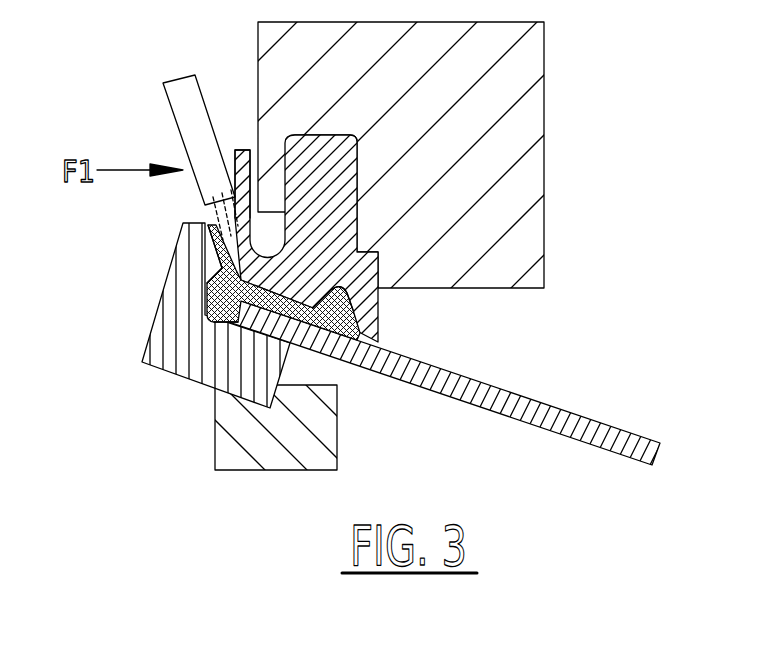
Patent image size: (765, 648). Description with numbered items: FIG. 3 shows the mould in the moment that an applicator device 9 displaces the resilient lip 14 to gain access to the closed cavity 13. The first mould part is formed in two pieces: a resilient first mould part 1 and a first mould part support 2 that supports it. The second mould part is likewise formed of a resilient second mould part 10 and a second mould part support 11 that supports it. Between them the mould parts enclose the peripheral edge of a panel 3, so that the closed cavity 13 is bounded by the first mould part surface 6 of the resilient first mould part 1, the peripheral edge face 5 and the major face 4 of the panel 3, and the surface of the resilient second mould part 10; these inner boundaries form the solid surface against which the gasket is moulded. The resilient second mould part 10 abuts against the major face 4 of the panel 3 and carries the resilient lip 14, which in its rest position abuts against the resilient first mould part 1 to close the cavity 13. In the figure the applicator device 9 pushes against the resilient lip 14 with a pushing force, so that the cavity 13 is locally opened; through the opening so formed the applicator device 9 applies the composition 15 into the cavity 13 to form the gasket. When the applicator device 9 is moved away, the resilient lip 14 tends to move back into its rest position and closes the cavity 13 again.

The resilient first mould part 1 is at (196, 360).
The first mould part support 2 is at (242, 460).
The panel 3 is at (565, 410).
The major face of the panel 4 is at (305, 323).
The peripheral edge face 5 is at (238, 310).
The first mould part surface 6 is at (215, 272).
The applicator device 9 is at (186, 98).
The resilient second mould part 10 is at (303, 153).
The second mould part support 11 is at (528, 78).
The closed cavity 13 is at (222, 300).
The resilient lip 14 is at (243, 160).
The composition 15 is at (213, 212).